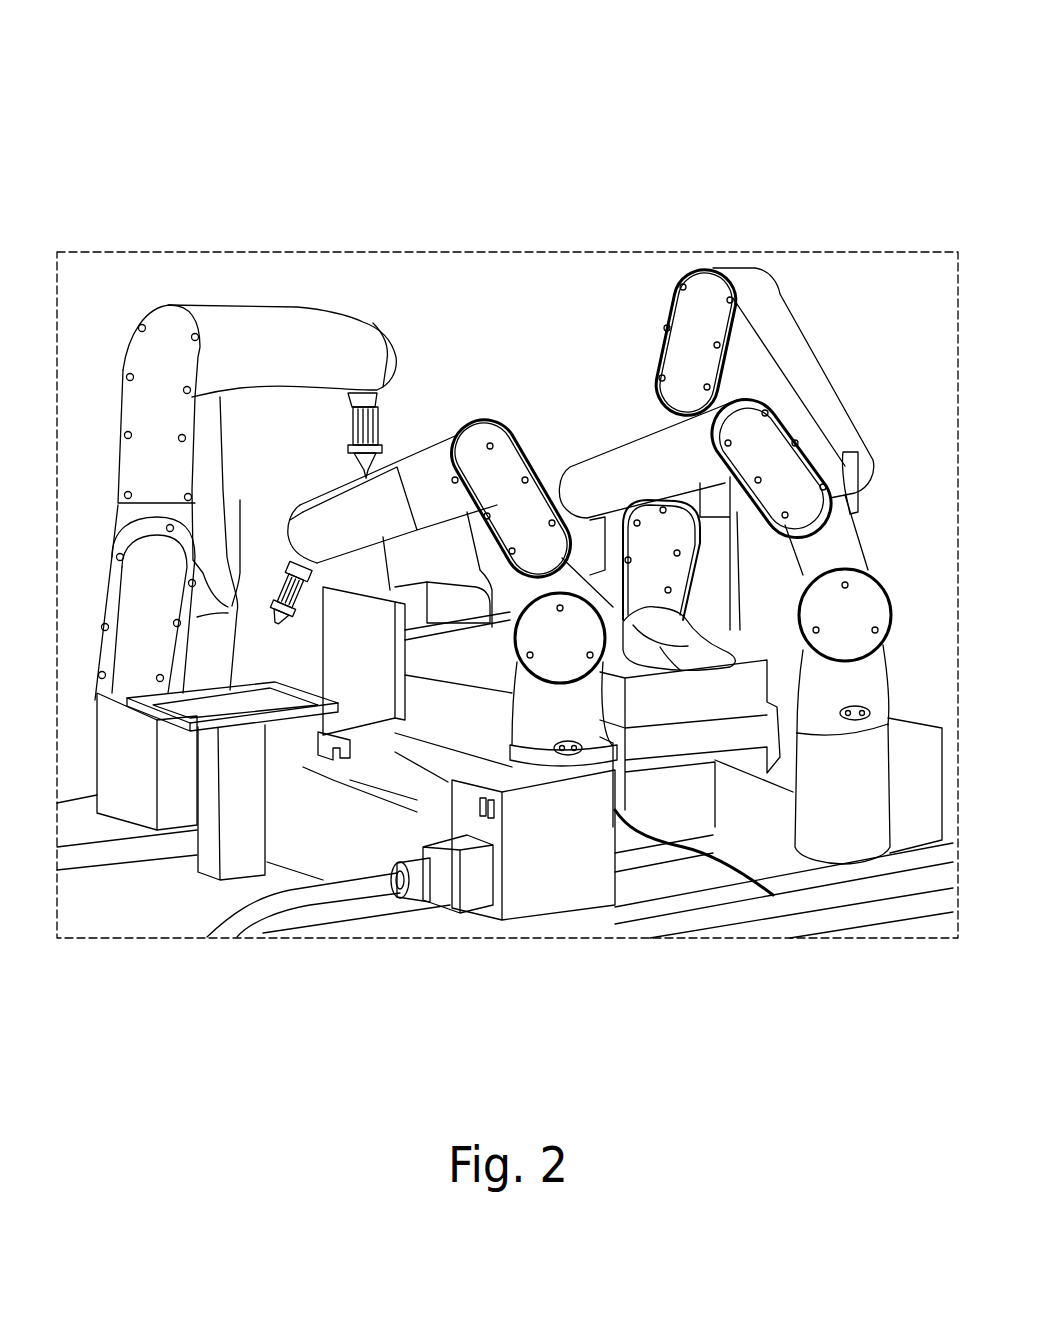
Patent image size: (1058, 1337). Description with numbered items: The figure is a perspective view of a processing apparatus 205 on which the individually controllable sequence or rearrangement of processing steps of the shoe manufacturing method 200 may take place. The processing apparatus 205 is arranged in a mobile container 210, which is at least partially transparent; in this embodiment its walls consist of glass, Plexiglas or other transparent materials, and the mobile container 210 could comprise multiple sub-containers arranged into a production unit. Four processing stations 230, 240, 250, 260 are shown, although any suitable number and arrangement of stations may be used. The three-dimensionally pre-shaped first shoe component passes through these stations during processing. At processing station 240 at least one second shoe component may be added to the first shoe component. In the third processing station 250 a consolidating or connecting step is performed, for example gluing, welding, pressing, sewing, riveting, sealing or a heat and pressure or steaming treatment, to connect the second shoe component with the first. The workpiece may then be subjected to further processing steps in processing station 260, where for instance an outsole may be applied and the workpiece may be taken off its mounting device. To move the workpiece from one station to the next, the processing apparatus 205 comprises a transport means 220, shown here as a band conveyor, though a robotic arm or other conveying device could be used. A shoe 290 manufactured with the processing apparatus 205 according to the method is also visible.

The method 200 is at (548, 212).
The processing apparatus 205 is at (180, 285).
The mobile container 210 is at (95, 578).
The transport means 220 is at (457, 667).
The processing station 230 is at (345, 348).
The processing station 240 is at (483, 470).
The third processing station 250 is at (583, 485).
The processing station 260 is at (692, 332).
The shoe 290 is at (663, 647).